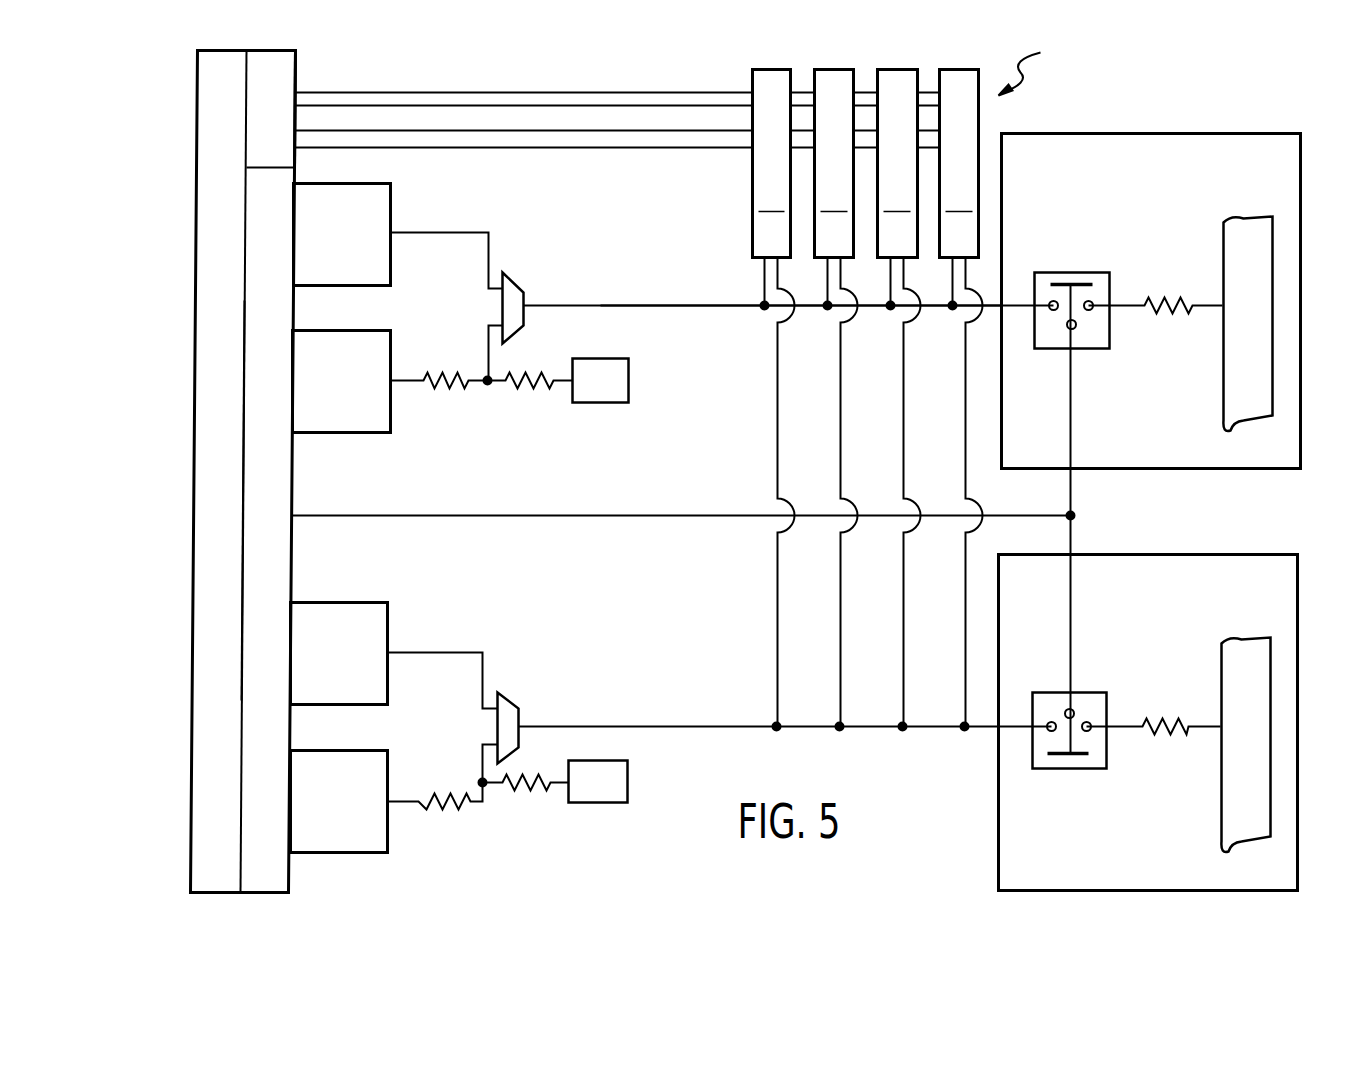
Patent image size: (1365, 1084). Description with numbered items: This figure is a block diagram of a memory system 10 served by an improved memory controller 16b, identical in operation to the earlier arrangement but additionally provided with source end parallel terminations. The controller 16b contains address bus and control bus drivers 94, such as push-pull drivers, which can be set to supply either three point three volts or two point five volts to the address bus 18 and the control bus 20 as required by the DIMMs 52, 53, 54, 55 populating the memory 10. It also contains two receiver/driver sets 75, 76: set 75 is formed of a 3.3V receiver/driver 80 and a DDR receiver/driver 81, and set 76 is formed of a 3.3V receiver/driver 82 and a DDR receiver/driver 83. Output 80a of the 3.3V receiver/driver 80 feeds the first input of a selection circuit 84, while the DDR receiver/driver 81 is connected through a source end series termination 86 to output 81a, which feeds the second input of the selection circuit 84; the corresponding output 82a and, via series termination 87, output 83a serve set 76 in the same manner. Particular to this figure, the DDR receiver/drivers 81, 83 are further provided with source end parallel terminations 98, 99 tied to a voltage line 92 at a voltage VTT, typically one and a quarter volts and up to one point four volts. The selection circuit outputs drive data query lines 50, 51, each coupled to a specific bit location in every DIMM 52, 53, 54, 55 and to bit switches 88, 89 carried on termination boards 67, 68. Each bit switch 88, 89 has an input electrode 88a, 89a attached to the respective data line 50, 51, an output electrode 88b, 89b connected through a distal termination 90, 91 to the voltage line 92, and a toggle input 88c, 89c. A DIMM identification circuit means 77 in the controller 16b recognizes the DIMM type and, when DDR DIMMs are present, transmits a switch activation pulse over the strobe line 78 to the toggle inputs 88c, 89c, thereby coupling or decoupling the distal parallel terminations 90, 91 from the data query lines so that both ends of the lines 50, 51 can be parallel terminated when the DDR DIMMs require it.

The memory 10 is at (1038, 70).
The memory controller 16b is at (197, 512).
The address bus 18 is at (650, 150).
The control bus 20 is at (650, 90).
The data query line 50 is at (700, 325).
The data query line 51 is at (701, 730).
The DIMM 52 is at (774, 400).
The DIMM 53 is at (836, 400).
The DIMM 54 is at (899, 400).
The DIMM 55 is at (961, 400).
The termination board 67 is at (1302, 428).
The termination board 68 is at (1299, 838).
The receiver/driver set 75 is at (498, 227).
The receiver/driver set 76 is at (494, 646).
The DIMM identification circuit means 77 is at (248, 697).
The strobe line 78 is at (696, 520).
The 3.3V receiver/driver 80 is at (391, 206).
The output 80a is at (489, 262).
The DDR receiver/driver 81 is at (391, 358).
The output 81a is at (489, 356).
The 3.3V receiver/driver 82 is at (388, 628).
The output 82a is at (483, 682).
The DDR receiver/driver 83 is at (388, 778).
The output 83a is at (482, 760).
The selection circuit 84 is at (524, 297).
The source termination 86 is at (450, 400).
The source termination 87 is at (445, 820).
The bit switch 88 is at (1088, 349).
The input electrode 88a is at (1050, 300).
The output electrode 88b is at (1091, 300).
The toggle input 88c is at (1066, 327).
The bit switch 89 is at (1064, 770).
The input electrode 89a is at (1050, 732).
The output electrode 89b is at (1088, 732).
The toggle input 89c is at (1065, 712).
The distal termination 90 is at (1170, 320).
The distal termination 91 is at (1168, 740).
The voltage line 92 is at (590, 405).
The address bus and control bus drivers 94 is at (296, 63).
The source end parallel termination 98 is at (530, 400).
The source end parallel termination 99 is at (527, 805).